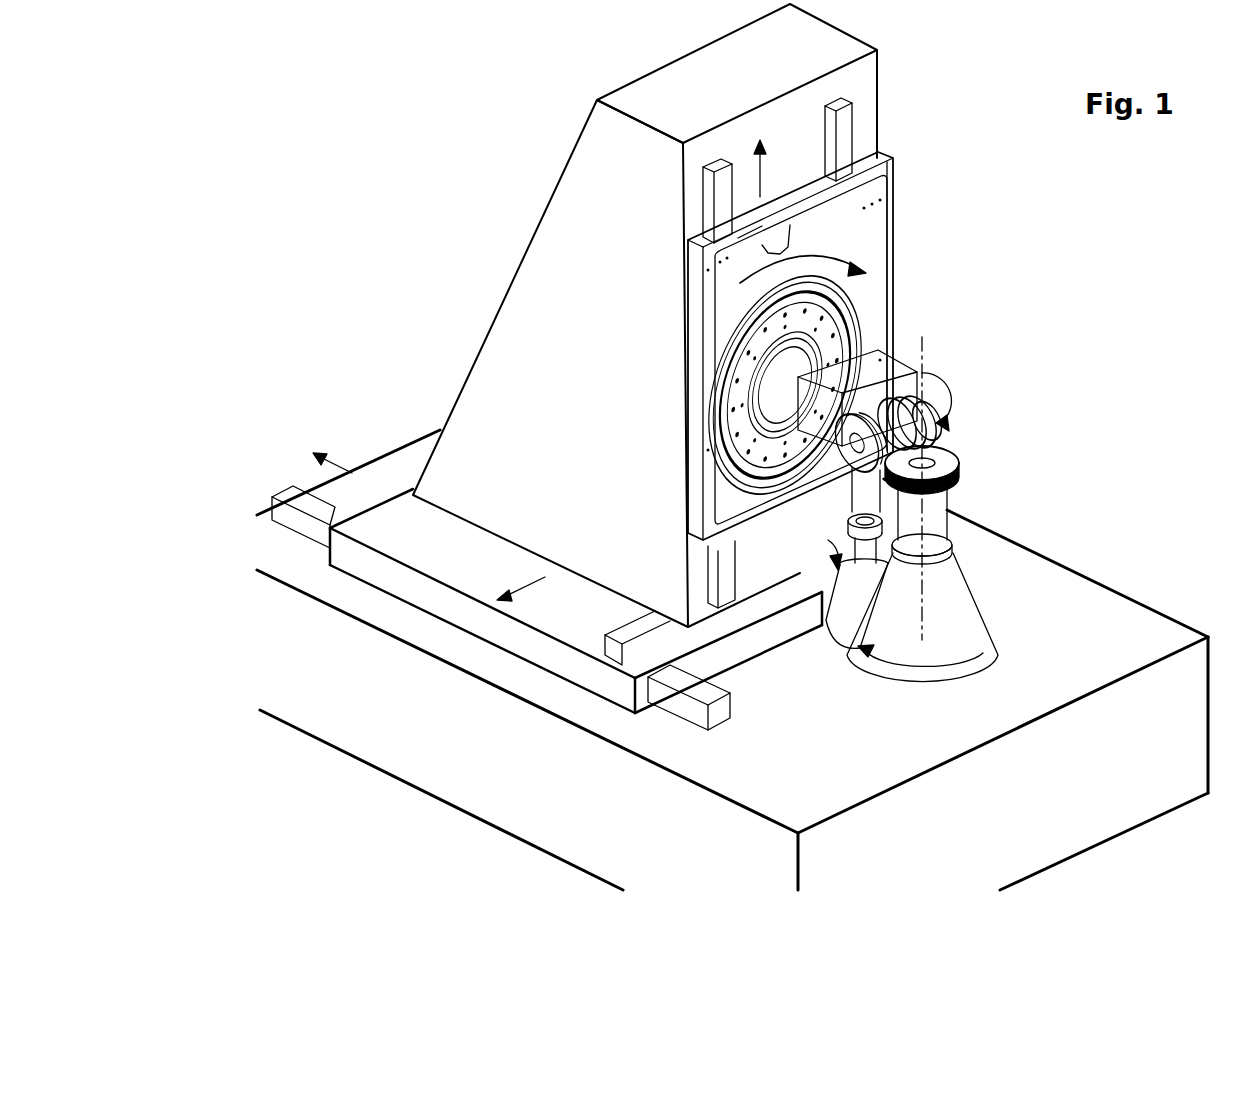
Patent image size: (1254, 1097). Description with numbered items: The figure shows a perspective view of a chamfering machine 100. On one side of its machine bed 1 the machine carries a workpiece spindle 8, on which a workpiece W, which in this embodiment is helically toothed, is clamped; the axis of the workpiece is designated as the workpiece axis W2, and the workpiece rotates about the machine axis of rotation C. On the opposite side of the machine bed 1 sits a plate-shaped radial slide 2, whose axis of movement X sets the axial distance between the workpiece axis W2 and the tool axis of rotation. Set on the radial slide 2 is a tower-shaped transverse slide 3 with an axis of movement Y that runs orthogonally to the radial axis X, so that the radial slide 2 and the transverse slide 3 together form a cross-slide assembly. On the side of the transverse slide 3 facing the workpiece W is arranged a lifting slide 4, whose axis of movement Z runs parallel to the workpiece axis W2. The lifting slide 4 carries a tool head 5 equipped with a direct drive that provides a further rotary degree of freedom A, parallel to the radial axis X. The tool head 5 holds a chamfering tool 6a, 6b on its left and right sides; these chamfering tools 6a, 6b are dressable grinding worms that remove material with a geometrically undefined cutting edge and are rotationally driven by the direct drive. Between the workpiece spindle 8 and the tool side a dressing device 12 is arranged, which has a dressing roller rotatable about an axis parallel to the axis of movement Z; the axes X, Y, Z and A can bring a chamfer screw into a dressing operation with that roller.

The chamfering machine 100 is at (335, 142).
The machine bed 1 is at (445, 720).
The radial slide 2 is at (435, 595).
The transverse slide 3 is at (565, 360).
The lifting slide 4 is at (873, 232).
The tool head 5 is at (867, 400).
The chamfering tool 6a is at (797, 392).
The chamfering tool 6b is at (923, 403).
The workpiece spindle 8 is at (960, 598).
The dressing device 12 is at (852, 605).
The workpiece W is at (948, 457).
The workpiece axis W2 is at (927, 518).